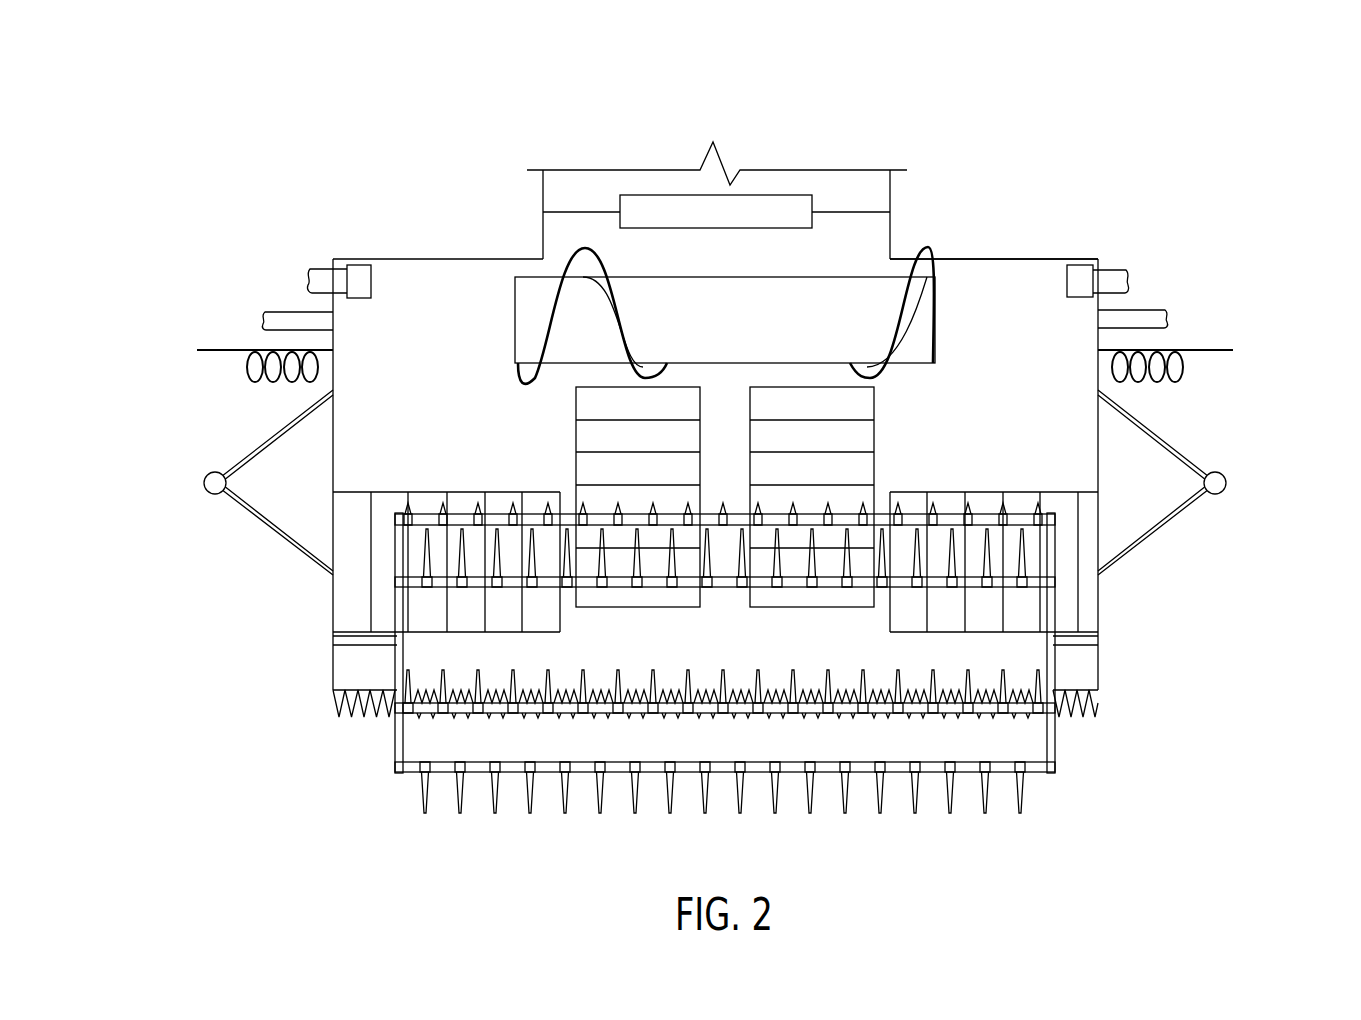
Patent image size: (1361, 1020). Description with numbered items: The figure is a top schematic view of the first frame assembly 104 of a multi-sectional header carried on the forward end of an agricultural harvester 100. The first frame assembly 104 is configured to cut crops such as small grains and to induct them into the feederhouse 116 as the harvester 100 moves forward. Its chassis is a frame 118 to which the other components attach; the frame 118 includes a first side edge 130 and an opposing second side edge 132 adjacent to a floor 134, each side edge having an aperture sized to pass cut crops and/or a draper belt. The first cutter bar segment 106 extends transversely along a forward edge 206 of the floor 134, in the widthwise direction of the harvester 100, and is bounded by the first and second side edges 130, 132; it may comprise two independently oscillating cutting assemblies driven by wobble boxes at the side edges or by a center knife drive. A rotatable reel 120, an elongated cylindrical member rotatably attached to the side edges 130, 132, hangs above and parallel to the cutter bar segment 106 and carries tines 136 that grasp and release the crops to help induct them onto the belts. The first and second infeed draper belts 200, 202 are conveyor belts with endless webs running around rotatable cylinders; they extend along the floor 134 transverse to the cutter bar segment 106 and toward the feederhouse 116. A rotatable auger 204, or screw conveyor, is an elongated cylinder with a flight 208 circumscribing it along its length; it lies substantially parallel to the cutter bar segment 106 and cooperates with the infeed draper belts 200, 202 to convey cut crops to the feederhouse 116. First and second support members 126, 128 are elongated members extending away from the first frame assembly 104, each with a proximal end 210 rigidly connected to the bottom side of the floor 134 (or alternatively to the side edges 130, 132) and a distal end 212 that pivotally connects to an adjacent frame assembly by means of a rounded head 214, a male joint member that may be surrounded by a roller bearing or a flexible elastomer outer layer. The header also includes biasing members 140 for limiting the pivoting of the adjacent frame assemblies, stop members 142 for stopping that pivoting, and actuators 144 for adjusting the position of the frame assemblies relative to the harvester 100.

The agricultural harvester 100 is at (766, 183).
The first frame assembly 104 is at (1058, 232).
The first cutter bar segment 106 is at (363, 718).
The feederhouse 116 is at (792, 207).
The frame 118 is at (1018, 257).
The rotatable reel 120 is at (393, 756).
The first support member 126 is at (242, 455).
The second support member 128 is at (1163, 437).
The first side edge 130 is at (320, 298).
The second side edge 132 is at (1115, 295).
The floor 134 is at (360, 667).
The tines 136 is at (634, 790).
The biasing members 140 is at (232, 350).
The stop members 142 is at (293, 312).
The actuators 144 is at (350, 262).
The first infeed draper belt 200 is at (574, 430).
The second infeed draper belt 202 is at (878, 414).
The rotatable auger 204 is at (864, 293).
The forward edge 206 is at (780, 675).
The flight 208 is at (927, 280).
The proximal end 210 is at (322, 386).
The distal end 212 is at (205, 457).
The rounded head 214 is at (203, 483).